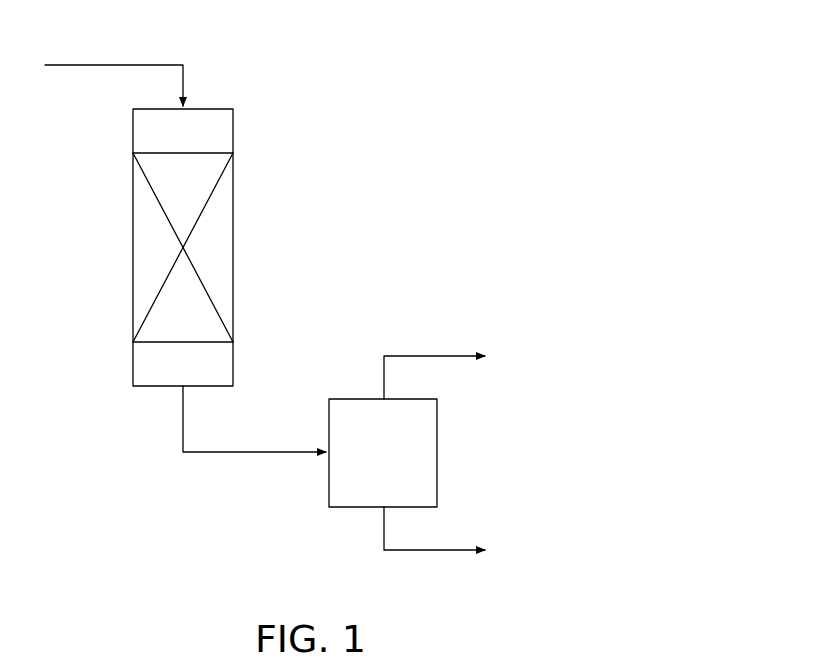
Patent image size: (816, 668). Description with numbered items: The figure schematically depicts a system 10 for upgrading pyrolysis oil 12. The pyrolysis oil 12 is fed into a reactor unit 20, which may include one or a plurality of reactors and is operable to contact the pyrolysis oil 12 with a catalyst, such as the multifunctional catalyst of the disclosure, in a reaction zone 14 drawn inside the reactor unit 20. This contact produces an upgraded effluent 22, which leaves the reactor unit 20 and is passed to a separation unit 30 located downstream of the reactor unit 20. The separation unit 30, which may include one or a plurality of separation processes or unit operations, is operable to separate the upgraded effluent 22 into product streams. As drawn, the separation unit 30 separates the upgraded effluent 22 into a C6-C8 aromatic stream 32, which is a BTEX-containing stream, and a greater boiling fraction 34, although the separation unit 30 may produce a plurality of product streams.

The system 10 is at (435, 96).
The pyrolysis oil 12 is at (102, 64).
The reaction zone 14 is at (150, 244).
The reactor unit 20 is at (237, 242).
The upgraded effluent 22 is at (242, 456).
The separation unit 30 is at (437, 452).
The C6-C8 aromatic stream 32 is at (432, 356).
The greater boiling fraction 34 is at (450, 554).